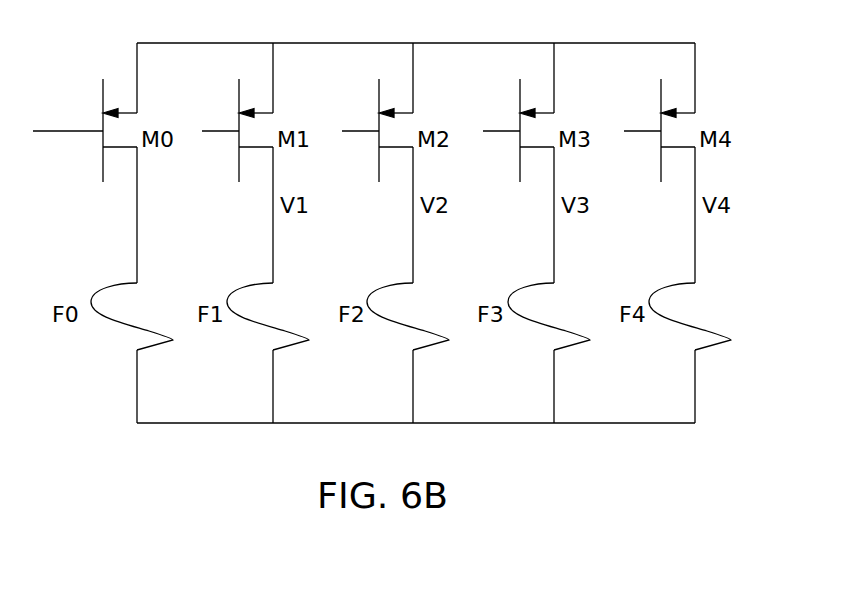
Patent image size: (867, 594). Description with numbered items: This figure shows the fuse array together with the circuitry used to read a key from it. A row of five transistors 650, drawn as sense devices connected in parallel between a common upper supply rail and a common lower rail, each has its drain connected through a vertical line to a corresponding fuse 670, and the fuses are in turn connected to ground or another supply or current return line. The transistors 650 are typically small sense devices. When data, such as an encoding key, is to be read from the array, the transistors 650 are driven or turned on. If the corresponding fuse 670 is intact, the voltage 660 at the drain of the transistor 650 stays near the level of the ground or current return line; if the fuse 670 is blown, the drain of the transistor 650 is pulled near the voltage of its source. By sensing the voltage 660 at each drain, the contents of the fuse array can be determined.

The transistor 650 is at (108, 112).
The voltage 660 is at (160, 215).
The fuse 670 is at (114, 353).